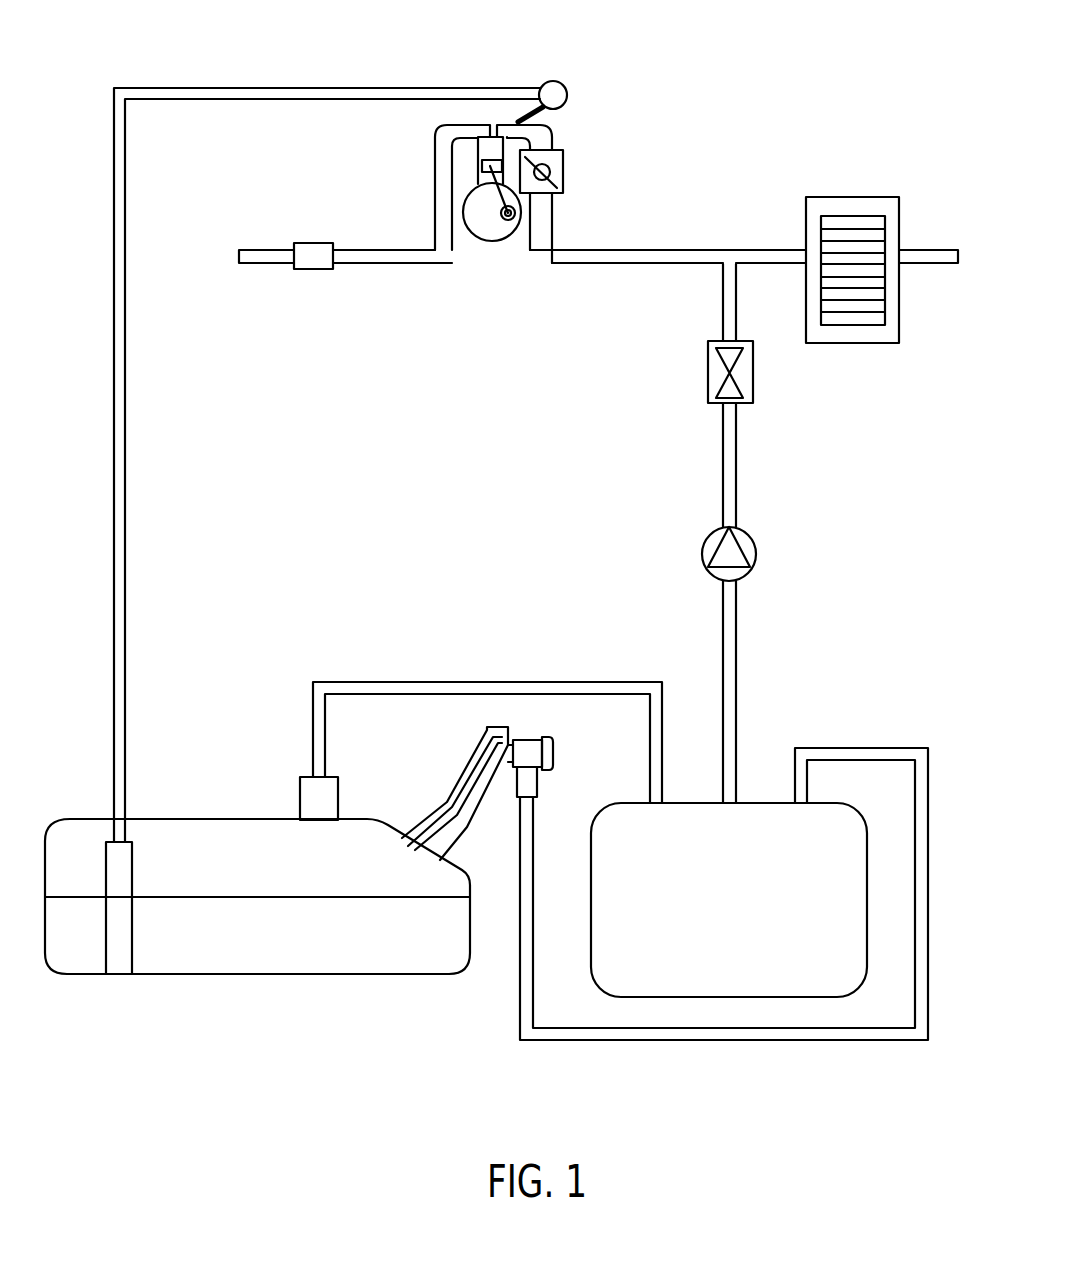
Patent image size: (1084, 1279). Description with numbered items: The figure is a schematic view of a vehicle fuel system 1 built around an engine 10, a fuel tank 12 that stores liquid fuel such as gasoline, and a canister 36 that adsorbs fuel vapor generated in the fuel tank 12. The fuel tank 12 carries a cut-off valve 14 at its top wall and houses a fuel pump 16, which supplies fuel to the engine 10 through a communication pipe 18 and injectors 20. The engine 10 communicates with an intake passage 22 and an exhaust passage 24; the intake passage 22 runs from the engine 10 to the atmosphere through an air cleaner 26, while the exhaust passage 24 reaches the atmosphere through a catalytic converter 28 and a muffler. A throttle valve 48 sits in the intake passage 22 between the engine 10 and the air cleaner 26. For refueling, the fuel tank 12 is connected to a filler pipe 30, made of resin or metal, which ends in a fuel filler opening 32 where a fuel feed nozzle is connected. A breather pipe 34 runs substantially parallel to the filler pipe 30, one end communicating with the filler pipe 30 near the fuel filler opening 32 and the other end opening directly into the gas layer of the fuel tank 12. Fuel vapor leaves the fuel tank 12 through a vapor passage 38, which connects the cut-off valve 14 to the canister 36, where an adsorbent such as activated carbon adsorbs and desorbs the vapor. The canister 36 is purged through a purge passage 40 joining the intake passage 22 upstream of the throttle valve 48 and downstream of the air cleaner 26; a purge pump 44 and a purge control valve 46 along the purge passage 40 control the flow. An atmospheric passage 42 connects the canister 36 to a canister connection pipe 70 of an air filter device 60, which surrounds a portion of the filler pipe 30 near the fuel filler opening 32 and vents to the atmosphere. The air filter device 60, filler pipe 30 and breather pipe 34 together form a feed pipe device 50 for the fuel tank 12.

The fuel system 1 is at (790, 57).
The engine 10 is at (490, 242).
The fuel tank 12 is at (257, 975).
The cut-off valve 14 is at (300, 797).
The fuel pump 16 is at (132, 932).
The communication pipe 18 is at (125, 513).
The injectors 20 is at (560, 82).
The intake passage 22 is at (648, 250).
The exhaust passage 24 is at (380, 252).
The air cleaner 26 is at (852, 197).
The catalytic converter 28 is at (312, 270).
The filler pipe 30 is at (483, 805).
The fuel filler opening 32 is at (553, 752).
The breather pipe 34 is at (472, 757).
The canister 36 is at (718, 997).
The vapor passage 38 is at (495, 682).
The purge passage 40 is at (735, 690).
The atmospheric passage 42 is at (862, 747).
The purge pump 44 is at (745, 533).
The purge control valve 46 is at (753, 377).
The throttle valve 48 is at (563, 165).
The feed pipe device 50 is at (425, 788).
The air filter device 60 is at (532, 723).
The canister connection pipe 70 is at (537, 787).